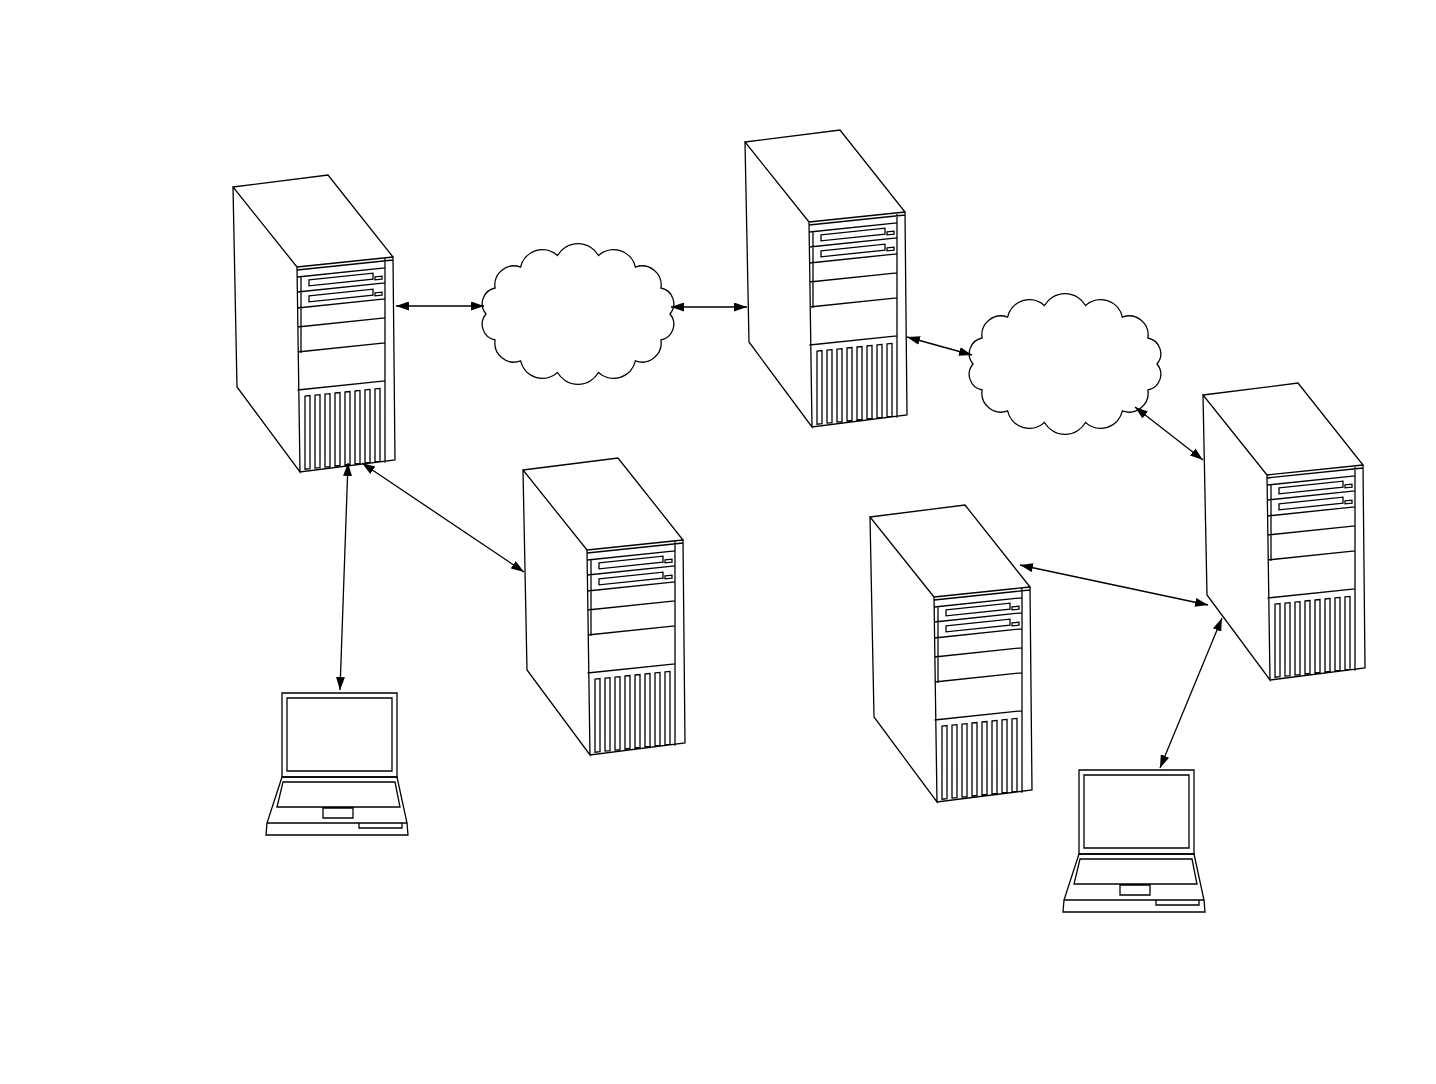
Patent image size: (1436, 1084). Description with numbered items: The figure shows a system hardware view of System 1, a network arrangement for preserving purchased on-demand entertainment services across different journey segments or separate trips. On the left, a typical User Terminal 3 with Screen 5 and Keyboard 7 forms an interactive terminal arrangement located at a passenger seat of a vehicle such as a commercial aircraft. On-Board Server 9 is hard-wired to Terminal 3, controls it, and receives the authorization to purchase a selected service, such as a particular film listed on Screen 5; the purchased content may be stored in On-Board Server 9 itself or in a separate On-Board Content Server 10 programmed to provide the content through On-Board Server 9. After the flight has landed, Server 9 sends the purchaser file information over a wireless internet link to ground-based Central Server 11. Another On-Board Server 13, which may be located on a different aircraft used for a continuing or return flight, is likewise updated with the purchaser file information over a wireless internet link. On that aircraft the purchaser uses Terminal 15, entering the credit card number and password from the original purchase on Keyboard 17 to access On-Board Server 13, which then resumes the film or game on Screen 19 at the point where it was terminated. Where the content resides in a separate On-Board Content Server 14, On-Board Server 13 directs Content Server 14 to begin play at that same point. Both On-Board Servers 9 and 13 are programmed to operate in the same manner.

The system 1 is at (1122, 194).
The user terminal 3 is at (358, 765).
The screen 5 is at (299, 738).
The keyboard 7 is at (388, 797).
The on-board server 9 is at (237, 297).
The on-board content server 10 is at (625, 752).
The central server 11 is at (847, 178).
The on-board server 13 is at (1322, 437).
The on-board content server 14 is at (883, 584).
The terminal 15 is at (1160, 842).
The keyboard 17 is at (1187, 874).
The screen 19 is at (1097, 814).